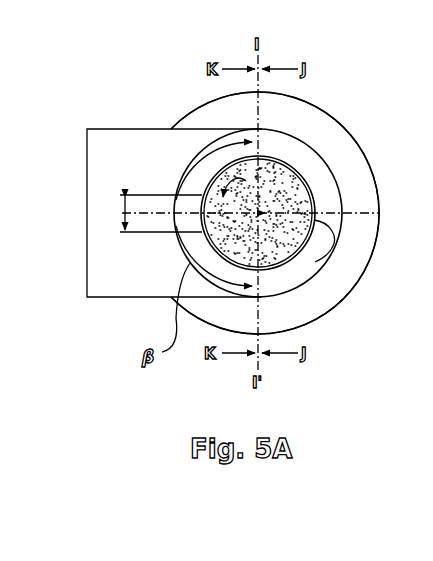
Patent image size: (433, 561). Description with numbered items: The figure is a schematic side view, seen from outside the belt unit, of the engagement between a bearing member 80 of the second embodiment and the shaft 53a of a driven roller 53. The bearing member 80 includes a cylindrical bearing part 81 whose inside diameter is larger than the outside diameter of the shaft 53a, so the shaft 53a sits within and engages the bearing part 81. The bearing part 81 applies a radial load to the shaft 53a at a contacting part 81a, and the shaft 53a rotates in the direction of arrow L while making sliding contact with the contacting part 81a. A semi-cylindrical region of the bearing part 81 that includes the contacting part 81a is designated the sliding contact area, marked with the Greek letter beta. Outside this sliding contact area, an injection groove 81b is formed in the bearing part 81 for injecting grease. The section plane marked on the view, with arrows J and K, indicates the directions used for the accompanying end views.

The driven roller 53 is at (366, 153).
The shaft 53a is at (297, 168).
The bearing member 80 is at (108, 298).
The bearing part 81 is at (296, 262).
The contacting part 81a is at (146, 213).
The injection groove 81b is at (317, 236).